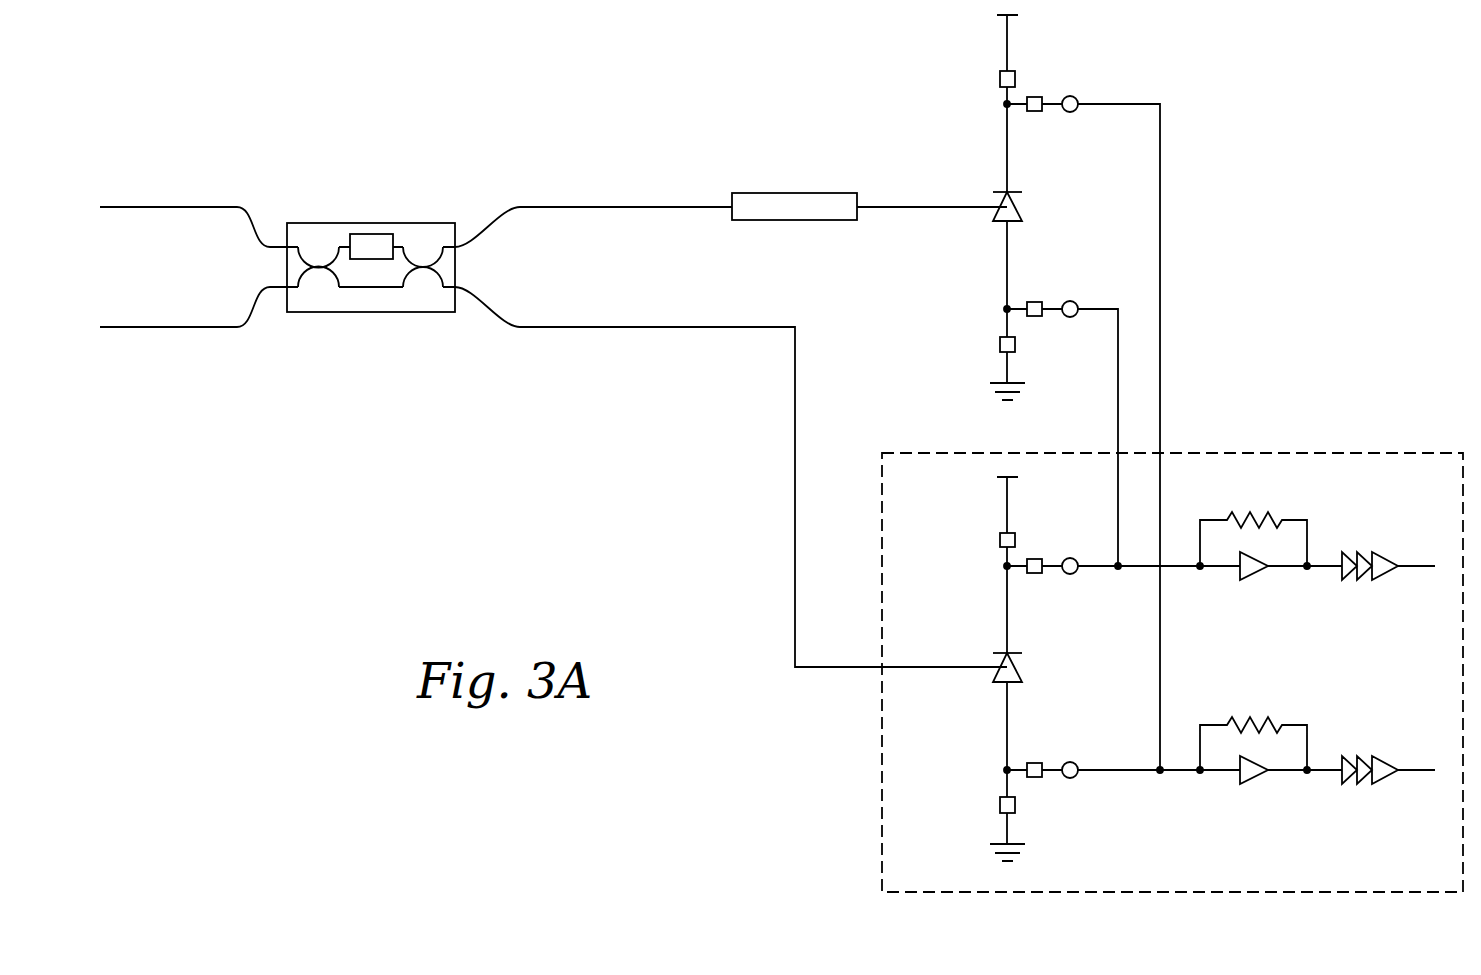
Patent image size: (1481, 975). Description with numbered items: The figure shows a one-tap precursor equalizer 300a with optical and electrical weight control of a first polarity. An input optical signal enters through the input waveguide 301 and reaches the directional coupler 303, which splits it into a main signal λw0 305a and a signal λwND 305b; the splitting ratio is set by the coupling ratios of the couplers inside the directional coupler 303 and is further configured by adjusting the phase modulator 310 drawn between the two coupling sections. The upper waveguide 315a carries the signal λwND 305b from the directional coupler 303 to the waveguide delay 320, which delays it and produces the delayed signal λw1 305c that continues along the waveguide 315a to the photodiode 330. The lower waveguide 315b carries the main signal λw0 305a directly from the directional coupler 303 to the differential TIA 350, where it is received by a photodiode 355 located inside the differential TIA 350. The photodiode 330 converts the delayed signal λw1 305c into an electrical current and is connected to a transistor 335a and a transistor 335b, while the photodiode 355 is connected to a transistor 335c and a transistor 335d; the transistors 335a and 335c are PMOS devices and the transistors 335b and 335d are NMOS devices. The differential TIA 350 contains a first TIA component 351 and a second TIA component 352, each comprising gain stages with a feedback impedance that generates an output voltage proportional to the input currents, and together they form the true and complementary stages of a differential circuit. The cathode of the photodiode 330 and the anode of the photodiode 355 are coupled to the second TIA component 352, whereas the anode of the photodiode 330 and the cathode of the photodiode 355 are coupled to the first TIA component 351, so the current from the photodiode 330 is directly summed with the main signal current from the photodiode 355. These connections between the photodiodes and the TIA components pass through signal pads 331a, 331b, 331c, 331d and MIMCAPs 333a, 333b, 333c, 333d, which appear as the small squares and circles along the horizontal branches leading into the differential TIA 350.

The one-tap precursor equalizer 300a is at (1307, 86).
The input waveguide 301 is at (130, 205).
The directional coupler 303 is at (440, 223).
The main signal λw0 305a is at (573, 368).
The signal λwND 305b is at (584, 172).
The delayed signal λw1 305c is at (922, 172).
The phase modulator 310 is at (369, 233).
The waveguide 315a is at (681, 206).
The waveguide 315b is at (680, 330).
The waveguide delay 320 is at (793, 193).
The photodiode 330 is at (1022, 207).
The signal pad 331a is at (1035, 97).
The signal pad 331b is at (1035, 302).
The signal pad 331c is at (1035, 559).
The signal pad 331d is at (1035, 763).
The MIMCAP 333a is at (1070, 112).
The MIMCAP 333b is at (1070, 317).
The MIMCAP 333c is at (1070, 574).
The MIMCAP 333d is at (1070, 778).
The transistor 335a is at (1000, 79).
The transistor 335b is at (1000, 344).
The transistor 335c is at (1000, 540).
The transistor 335d is at (1000, 805).
The differential TIA 350 is at (1365, 453).
The first TIA component 351 is at (1255, 572).
The second TIA component 352 is at (1255, 776).
The photodiode 355 is at (1022, 667).